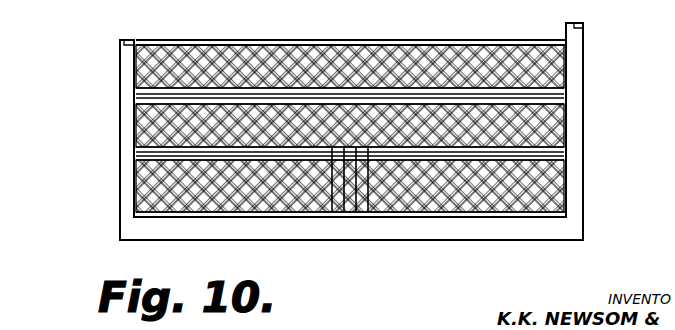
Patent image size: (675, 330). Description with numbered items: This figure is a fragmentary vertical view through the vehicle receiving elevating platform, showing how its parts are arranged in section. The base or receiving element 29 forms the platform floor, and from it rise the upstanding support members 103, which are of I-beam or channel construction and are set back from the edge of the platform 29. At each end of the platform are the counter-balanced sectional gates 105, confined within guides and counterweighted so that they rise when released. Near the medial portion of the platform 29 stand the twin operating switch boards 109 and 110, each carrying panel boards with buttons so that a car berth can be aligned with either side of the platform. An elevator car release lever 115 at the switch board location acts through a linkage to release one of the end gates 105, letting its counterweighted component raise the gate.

The base or receiving element 29 is at (450, 240).
The upstanding support members 103 is at (128, 163).
The counter-balanced sectional gates 105 is at (150, 63).
The operating switch board 109 is at (330, 214).
The operating switch board 110 is at (369, 214).
The elevator car release lever 115 is at (355, 214).